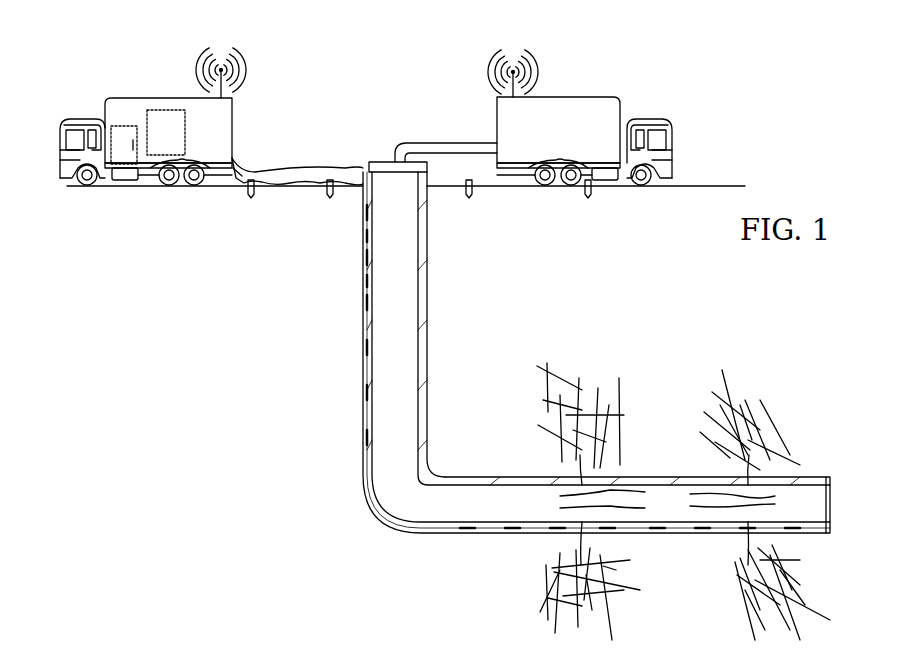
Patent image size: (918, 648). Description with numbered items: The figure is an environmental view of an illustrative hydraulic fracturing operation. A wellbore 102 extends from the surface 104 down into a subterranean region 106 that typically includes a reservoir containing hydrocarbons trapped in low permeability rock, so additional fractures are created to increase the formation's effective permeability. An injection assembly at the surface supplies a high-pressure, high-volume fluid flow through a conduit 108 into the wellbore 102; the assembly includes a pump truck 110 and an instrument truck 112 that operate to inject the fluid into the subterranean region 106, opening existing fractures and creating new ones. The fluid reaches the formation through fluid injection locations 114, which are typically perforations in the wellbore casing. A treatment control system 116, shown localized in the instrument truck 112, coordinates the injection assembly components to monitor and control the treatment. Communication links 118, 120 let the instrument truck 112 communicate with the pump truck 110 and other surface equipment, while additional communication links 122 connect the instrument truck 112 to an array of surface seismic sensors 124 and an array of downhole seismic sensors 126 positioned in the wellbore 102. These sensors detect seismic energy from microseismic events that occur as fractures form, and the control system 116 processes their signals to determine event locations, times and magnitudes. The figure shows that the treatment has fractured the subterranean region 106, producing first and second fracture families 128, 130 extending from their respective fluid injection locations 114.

The wellbore 102 is at (428, 246).
The surface 104 is at (666, 188).
The subterranean region 106 is at (703, 612).
The conduit 108 is at (419, 148).
The pump truck 110 is at (615, 99).
The instrument truck 112 is at (109, 102).
The fluid injection location 114 is at (667, 504).
The treatment control system 116 is at (163, 112).
The communication link 118 is at (238, 58).
The communication link 120 is at (529, 58).
The communication link 122 is at (241, 176).
The surface seismic sensor 124 is at (325, 198).
The downhole seismic sensor 126 is at (365, 258).
The first fracture family 128 is at (622, 358).
The second fracture family 130 is at (788, 358).